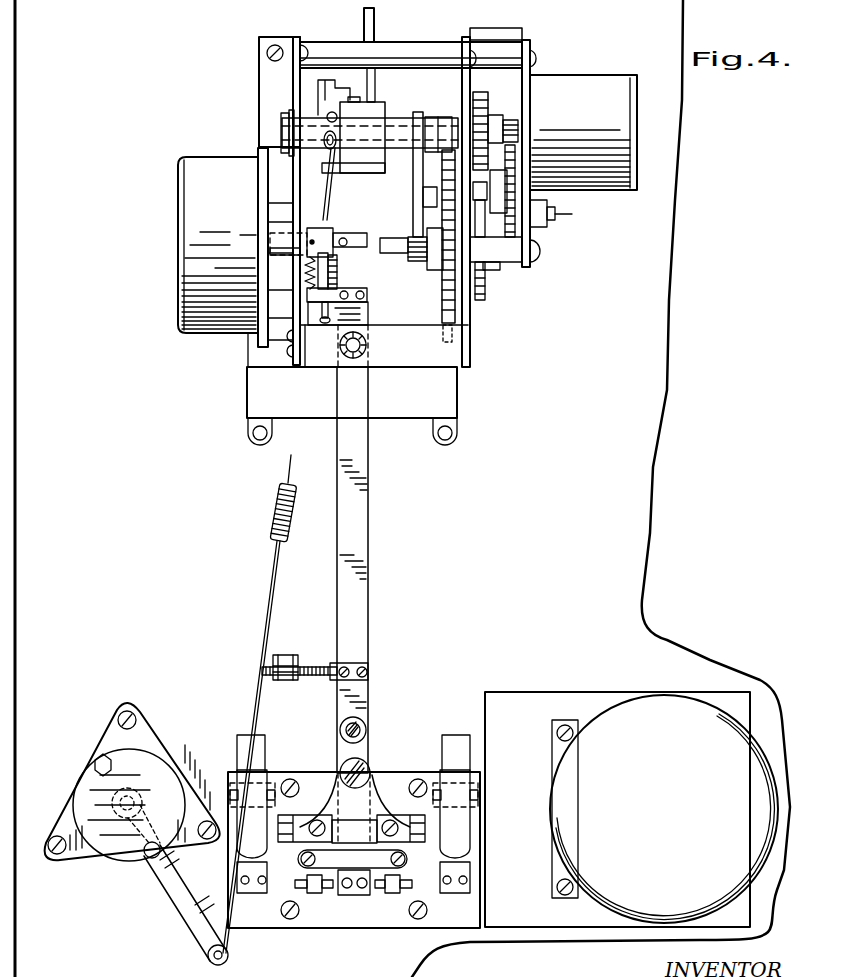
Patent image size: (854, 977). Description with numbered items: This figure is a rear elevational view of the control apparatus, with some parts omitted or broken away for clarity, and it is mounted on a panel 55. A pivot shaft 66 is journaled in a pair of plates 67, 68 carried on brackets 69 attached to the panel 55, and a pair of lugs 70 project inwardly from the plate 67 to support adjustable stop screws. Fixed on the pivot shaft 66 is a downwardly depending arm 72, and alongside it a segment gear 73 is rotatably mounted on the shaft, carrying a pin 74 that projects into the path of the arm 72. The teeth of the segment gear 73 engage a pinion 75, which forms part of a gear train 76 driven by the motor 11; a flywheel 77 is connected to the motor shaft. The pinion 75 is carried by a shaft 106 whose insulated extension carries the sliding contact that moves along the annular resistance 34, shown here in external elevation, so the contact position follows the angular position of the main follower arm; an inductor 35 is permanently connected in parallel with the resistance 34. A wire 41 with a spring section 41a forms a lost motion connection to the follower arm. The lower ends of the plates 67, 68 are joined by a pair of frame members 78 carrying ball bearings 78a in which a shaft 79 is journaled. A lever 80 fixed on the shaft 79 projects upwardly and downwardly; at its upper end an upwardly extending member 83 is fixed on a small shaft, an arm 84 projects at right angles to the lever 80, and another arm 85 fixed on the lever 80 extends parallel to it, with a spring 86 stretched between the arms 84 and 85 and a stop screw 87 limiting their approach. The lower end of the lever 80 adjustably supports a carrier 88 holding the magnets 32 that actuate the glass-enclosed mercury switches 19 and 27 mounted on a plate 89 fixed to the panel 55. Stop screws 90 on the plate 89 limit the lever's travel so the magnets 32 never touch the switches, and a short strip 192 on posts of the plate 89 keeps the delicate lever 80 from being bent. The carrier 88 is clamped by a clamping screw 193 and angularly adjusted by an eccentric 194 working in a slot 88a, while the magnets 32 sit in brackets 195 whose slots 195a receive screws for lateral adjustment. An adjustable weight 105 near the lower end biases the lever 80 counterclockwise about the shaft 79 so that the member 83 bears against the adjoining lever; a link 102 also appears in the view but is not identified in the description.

The motor 11 is at (583, 92).
The switch 19 is at (240, 845).
The switch 27 is at (460, 830).
The magnets 32 is at (293, 815).
The resistance 34 is at (178, 187).
The inductor 35 is at (648, 700).
The wire 41 is at (327, 192).
The spring section 41a is at (257, 498).
The panel 55 is at (660, 387).
The pivot shaft 66 is at (396, 128).
The plate 67 is at (293, 92).
The plate 68 is at (460, 78).
The brackets 69 is at (490, 42).
The lugs 70 is at (312, 150).
The arm 72 is at (435, 120).
The segment gear 73 is at (413, 170).
The pin 74 is at (423, 191).
The pinion 75 is at (415, 268).
The gear train 76 is at (508, 284).
The flywheel 77 is at (482, 95).
The frame members 78 is at (402, 372).
The ball bearings 78a is at (368, 340).
The shaft 79 is at (345, 367).
The lever 80 is at (366, 447).
The upwardly extending member 83 is at (374, 20).
The arm 84 is at (318, 238).
The arm 85 is at (336, 320).
The spring 86 is at (310, 272).
The stop screw 87 is at (330, 272).
The carrier 88 is at (378, 778).
The slot 88a is at (345, 733).
The plate 89 is at (262, 932).
The stop screws 90 is at (378, 895).
The link 102 is at (178, 912).
The adjustable weight 105 is at (283, 657).
The shaft 106 is at (272, 241).
The strip 192 is at (320, 900).
The clamping screw 193 is at (362, 762).
The eccentric 194 is at (360, 730).
The brackets 195 is at (340, 823).
The slots 195a is at (318, 818).